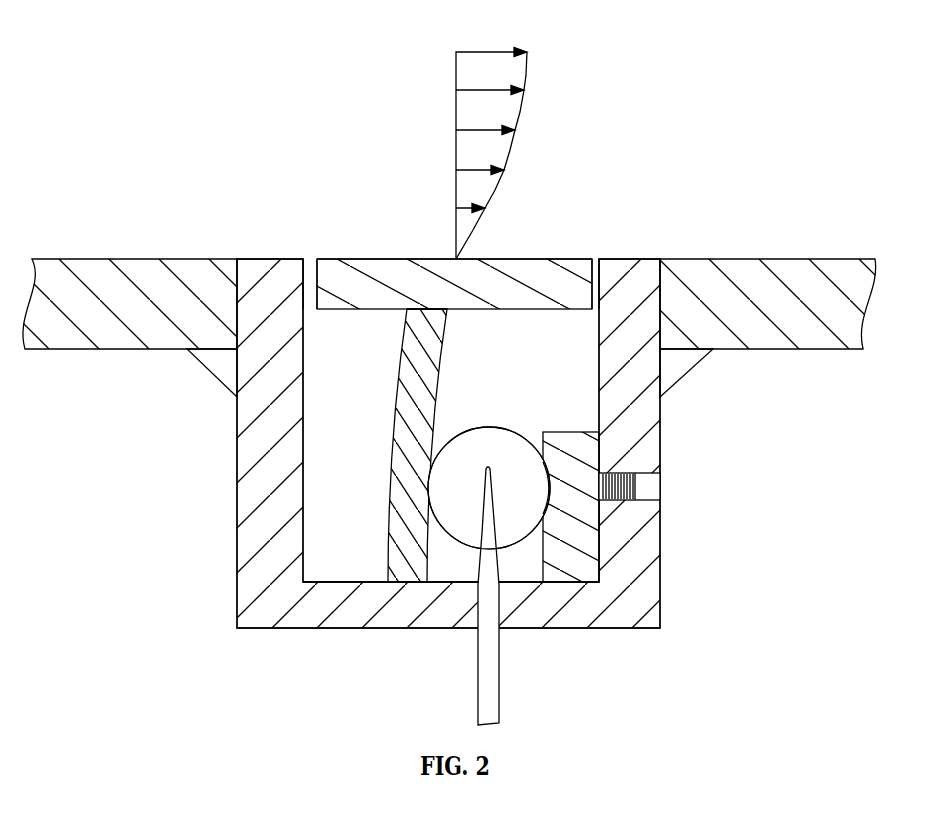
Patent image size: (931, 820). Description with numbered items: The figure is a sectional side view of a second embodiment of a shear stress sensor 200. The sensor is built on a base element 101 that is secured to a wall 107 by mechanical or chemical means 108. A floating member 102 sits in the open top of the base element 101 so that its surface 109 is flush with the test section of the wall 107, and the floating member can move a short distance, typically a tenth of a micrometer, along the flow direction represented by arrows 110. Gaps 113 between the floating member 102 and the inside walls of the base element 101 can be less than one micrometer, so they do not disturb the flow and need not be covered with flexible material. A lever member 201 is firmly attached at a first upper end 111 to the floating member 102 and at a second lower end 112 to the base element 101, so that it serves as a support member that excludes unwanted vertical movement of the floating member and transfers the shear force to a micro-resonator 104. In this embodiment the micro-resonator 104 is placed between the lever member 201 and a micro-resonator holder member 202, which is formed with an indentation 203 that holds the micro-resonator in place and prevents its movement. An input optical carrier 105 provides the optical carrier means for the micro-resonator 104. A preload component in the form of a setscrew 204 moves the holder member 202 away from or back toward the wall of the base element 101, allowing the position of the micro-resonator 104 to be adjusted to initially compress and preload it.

The shear stress sensor 200 is at (352, 447).
The base element 101 is at (247, 630).
The floating member 102 is at (393, 262).
The micro-resonator 104 is at (467, 432).
The input optical carrier 105 is at (499, 695).
The wall 107 is at (110, 259).
The mechanical or chemical means 108 is at (212, 375).
The surface 109 is at (500, 259).
The arrows 110 is at (491, 131).
The first upper end 111 is at (430, 312).
The second lower end 112 is at (408, 582).
The gaps 113 is at (302, 259).
The lever member 201 is at (393, 483).
The micro-resonator holder member 202 is at (582, 433).
The indentation 203 is at (558, 512).
The setscrew 204 is at (628, 470).